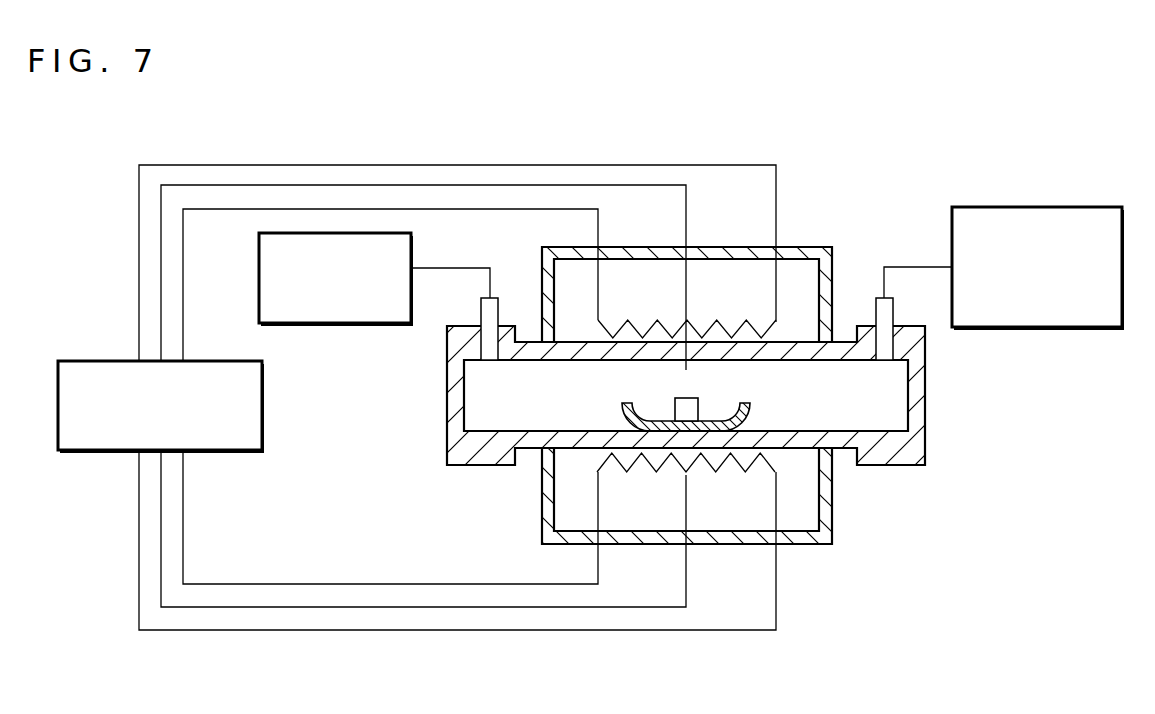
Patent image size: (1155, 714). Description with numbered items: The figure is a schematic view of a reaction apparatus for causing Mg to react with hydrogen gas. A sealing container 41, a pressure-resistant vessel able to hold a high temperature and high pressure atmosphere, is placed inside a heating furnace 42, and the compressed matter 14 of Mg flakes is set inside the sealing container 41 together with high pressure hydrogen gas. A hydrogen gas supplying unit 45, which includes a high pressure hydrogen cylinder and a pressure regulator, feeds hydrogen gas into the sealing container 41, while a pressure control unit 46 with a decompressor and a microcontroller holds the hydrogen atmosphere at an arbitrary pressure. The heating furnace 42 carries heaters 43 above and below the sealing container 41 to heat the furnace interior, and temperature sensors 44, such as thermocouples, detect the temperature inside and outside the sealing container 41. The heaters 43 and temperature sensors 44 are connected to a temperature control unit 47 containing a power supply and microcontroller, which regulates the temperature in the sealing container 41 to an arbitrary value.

The compressed matter 14 is at (690, 397).
The sealing container 41 is at (925, 420).
The heating furnace 42 is at (822, 246).
The heaters 43 is at (728, 322).
The temperature sensors 44 is at (687, 222).
The hydrogen gas supplying unit 45 is at (1010, 207).
The pressure control unit 46 is at (355, 325).
The temperature control unit 47 is at (262, 397).